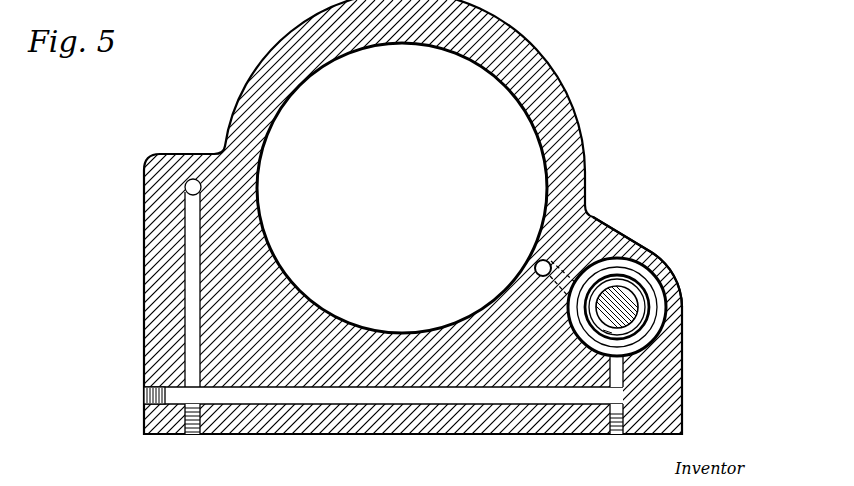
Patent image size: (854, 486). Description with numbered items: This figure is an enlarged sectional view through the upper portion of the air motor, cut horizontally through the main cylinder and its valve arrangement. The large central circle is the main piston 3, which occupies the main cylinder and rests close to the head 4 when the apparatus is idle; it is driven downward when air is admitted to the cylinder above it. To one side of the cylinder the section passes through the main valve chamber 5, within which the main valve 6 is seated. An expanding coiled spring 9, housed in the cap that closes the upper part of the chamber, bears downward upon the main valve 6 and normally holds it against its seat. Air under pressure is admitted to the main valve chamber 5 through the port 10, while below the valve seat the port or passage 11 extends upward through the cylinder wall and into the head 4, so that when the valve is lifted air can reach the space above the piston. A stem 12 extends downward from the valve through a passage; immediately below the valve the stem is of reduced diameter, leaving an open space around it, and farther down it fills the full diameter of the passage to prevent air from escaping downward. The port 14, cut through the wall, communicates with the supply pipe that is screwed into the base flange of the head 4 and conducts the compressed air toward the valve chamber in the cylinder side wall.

The main piston 3 is at (402, 188).
The head 4 is at (541, 82).
The main valve chamber 5 is at (676, 272).
The main valve 6 is at (656, 305).
The expanding coiled spring 9 is at (617, 279).
The port 10 is at (616, 372).
The port or passage 11 is at (547, 260).
The stem 12 is at (627, 292).
The port 14 is at (192, 180).